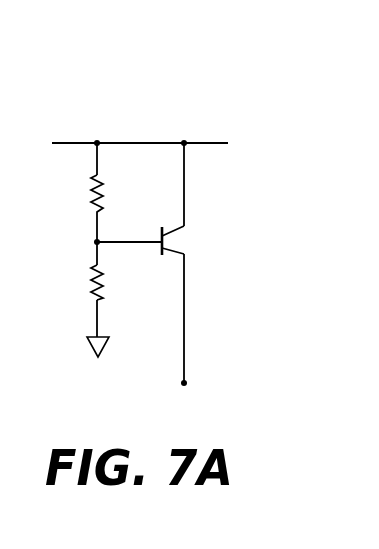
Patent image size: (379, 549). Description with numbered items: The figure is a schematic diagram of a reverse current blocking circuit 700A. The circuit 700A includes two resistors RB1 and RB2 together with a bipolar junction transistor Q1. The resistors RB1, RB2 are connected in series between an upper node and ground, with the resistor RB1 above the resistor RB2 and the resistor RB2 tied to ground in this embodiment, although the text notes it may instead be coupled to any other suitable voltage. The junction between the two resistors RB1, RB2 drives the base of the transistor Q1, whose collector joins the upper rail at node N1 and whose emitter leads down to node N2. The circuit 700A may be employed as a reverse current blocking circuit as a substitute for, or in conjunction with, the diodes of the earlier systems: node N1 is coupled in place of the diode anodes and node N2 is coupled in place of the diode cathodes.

The circuit 700A is at (238, 102).
The node N1 is at (97, 143).
The node N2 is at (184, 383).
The resistor RB1 is at (71, 195).
The resistor RB2 is at (71, 282).
The bipolar junction transistor Q1 is at (156, 240).